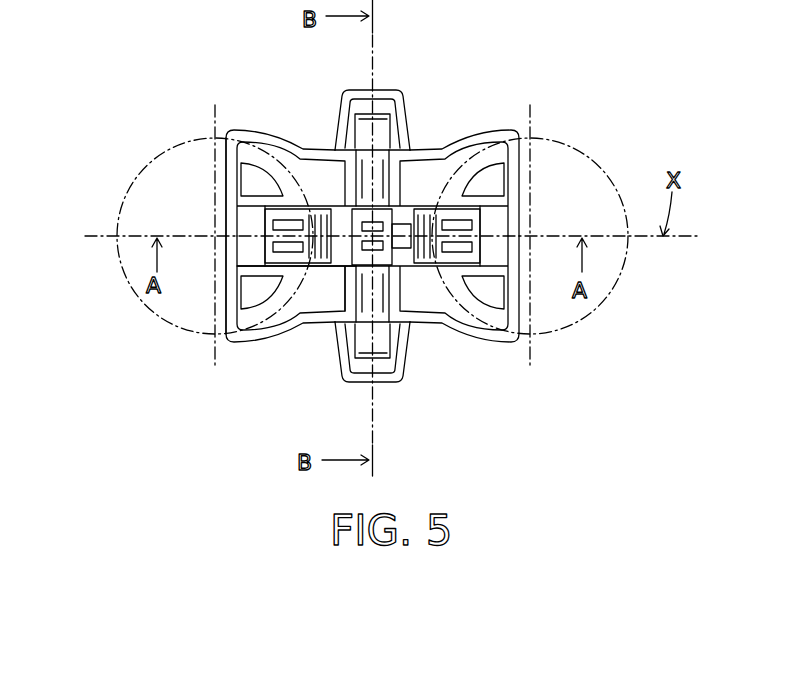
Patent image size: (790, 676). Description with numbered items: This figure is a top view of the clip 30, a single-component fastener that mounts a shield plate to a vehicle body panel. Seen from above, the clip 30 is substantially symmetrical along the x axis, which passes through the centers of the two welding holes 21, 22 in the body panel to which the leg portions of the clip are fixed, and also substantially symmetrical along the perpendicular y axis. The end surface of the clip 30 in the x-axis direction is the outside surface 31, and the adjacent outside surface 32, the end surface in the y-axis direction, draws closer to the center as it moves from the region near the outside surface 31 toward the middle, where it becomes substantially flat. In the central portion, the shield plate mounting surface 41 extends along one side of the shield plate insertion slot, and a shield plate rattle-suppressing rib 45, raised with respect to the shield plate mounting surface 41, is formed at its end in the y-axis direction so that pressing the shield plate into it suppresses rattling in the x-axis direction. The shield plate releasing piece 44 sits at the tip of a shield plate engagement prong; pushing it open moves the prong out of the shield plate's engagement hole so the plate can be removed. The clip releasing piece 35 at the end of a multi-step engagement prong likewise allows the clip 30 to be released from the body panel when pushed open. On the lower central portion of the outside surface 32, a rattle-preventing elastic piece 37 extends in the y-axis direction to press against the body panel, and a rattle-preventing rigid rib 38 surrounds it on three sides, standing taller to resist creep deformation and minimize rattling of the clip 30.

The welding hole 21 is at (119, 190).
The welding hole 22 is at (604, 158).
The clip 30 is at (489, 106).
The outside surface 31 is at (226, 180).
The outside surface 32 is at (340, 280).
The clip releasing piece 35 is at (447, 215).
The rattle-preventing elastic piece 37 is at (365, 100).
The rattle-preventing rigid rib 38 is at (388, 92).
The shield plate mounting surface 41 is at (307, 208).
The shield plate releasing piece 44 is at (398, 250).
The shield plate rattle-suppressing rib 45 is at (378, 142).